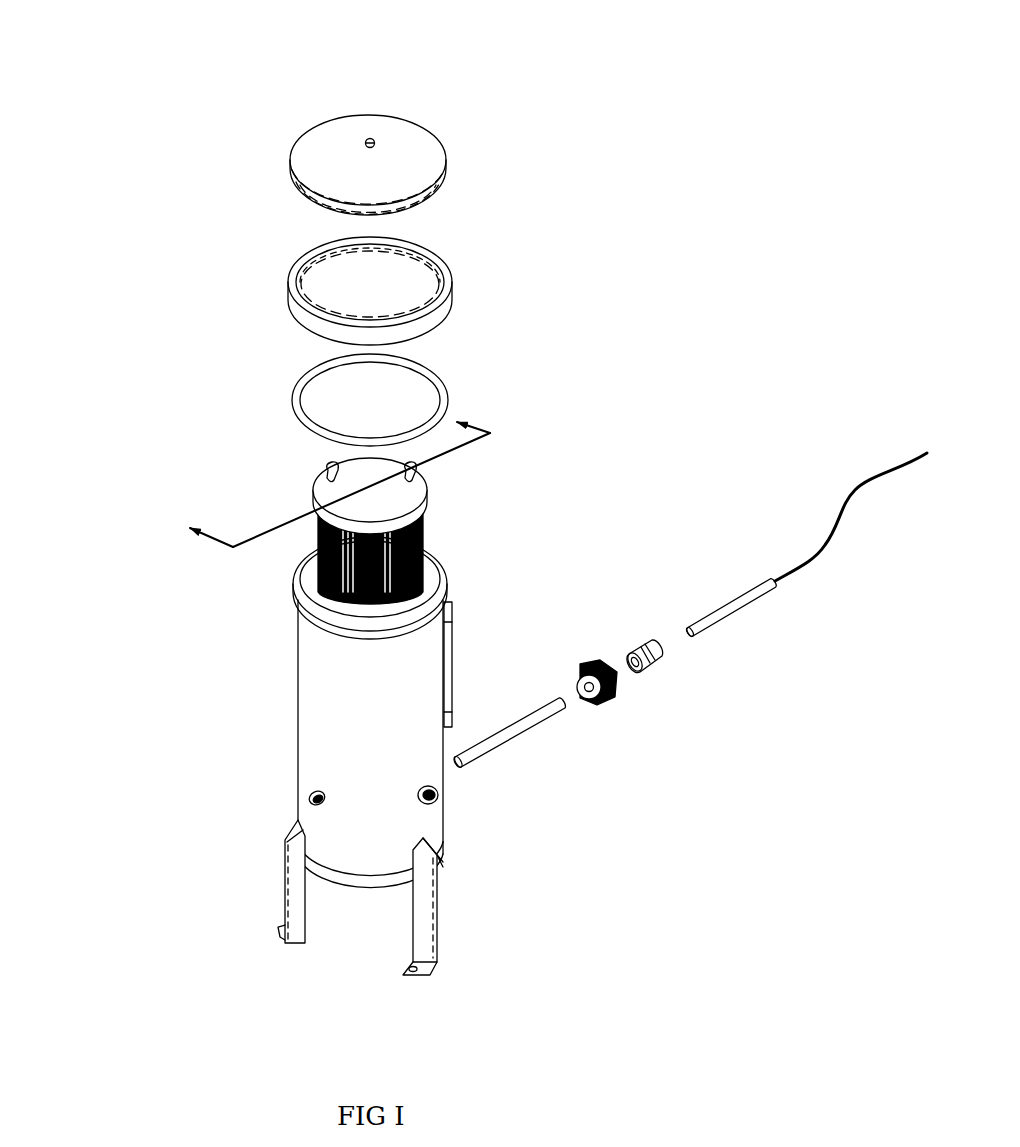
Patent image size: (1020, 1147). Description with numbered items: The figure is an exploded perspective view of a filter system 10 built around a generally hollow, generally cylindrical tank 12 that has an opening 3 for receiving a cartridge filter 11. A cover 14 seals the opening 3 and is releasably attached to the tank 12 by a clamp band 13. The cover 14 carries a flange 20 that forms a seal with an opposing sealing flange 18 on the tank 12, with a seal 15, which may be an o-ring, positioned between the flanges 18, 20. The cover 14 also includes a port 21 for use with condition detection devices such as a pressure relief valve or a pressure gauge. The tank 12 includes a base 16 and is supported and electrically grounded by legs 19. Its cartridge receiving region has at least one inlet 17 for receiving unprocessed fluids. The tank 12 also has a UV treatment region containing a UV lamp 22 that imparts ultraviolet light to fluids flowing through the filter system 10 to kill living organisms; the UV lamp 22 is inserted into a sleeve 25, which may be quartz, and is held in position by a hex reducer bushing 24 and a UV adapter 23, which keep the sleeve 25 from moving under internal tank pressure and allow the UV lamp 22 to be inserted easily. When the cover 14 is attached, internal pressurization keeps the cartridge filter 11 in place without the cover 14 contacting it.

The filter system 10 is at (210, 568).
The cartridge filter 11 is at (310, 483).
The tank 12 is at (298, 668).
The clamp band 13 is at (290, 290).
The cover 14 is at (322, 158).
The seal 15 is at (455, 390).
The base 16 is at (365, 900).
The inlet 17 is at (418, 793).
The sealing flange 18 is at (457, 570).
The legs 19 is at (408, 862).
The flange 20 is at (460, 167).
The port 21 is at (387, 123).
The UV lamp 22 is at (740, 606).
The UV adapter 23 is at (662, 668).
The hex reducer bushing 24 is at (612, 705).
The sleeve 25 is at (497, 753).
The opening 3 is at (480, 493).